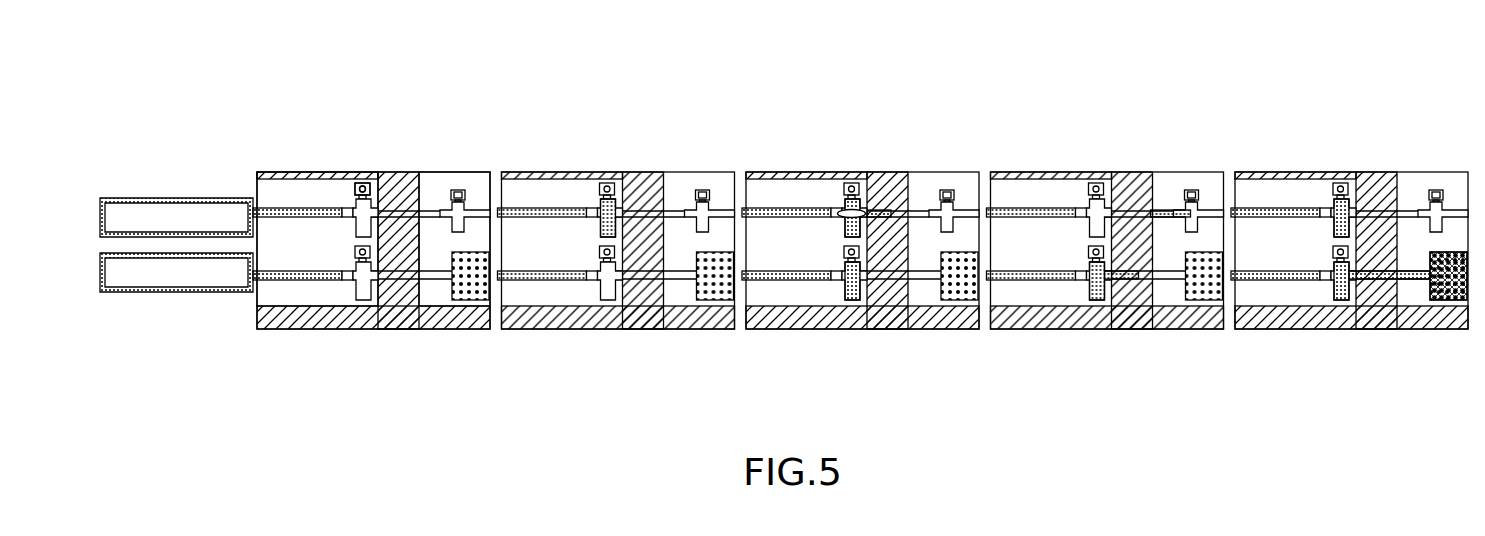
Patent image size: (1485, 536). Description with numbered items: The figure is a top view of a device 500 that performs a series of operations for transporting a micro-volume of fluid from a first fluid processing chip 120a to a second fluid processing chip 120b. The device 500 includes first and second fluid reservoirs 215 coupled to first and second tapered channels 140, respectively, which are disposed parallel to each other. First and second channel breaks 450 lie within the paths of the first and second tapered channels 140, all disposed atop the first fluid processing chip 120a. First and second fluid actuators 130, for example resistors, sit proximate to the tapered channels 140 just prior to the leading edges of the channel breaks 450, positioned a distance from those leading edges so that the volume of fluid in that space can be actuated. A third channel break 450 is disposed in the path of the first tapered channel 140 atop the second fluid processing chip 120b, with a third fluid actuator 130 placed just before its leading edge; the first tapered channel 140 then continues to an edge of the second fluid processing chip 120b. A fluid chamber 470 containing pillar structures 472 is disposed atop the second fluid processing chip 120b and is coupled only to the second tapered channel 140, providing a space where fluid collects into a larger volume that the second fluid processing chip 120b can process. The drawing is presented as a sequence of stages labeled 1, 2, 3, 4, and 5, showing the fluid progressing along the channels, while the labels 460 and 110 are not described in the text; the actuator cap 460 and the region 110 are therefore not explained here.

The device 500 is at (202, 73).
The fluid reservoirs 215 is at (178, 198).
The first fluid processing chip 120a is at (310, 213).
The second fluid processing chip 120b is at (407, 235).
The fluid actuators 130 is at (397, 210).
The valve actuator 460 is at (362, 158).
The channel breaks 450 is at (398, 234).
The substrate 110 is at (454, 213).
The tapered channels 140 is at (352, 244).
The fluid chamber 470 is at (373, 337).
The pillar structures 472 is at (481, 317).
The module 1 is at (400, 236).
The module 2 is at (616, 234).
The module 3 is at (860, 234).
The module 4 is at (1105, 234).
The module 5 is at (1349, 234).